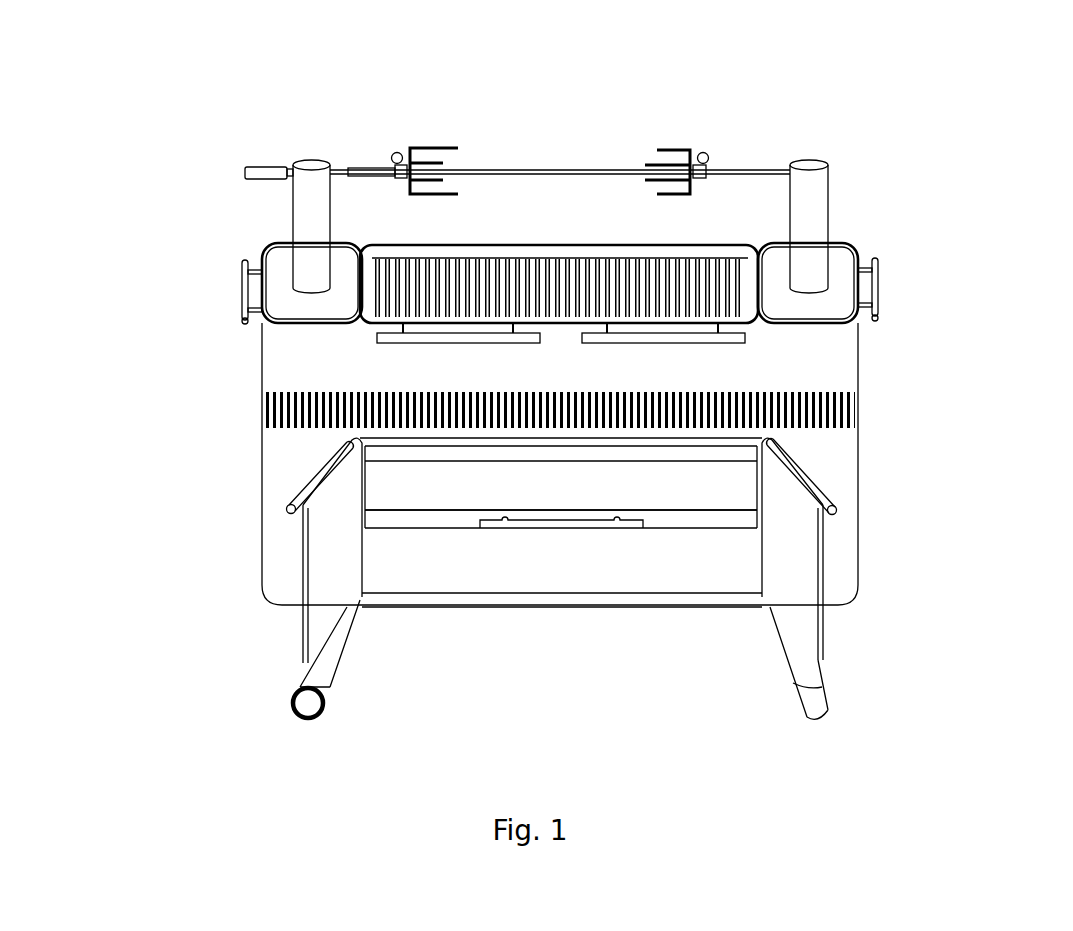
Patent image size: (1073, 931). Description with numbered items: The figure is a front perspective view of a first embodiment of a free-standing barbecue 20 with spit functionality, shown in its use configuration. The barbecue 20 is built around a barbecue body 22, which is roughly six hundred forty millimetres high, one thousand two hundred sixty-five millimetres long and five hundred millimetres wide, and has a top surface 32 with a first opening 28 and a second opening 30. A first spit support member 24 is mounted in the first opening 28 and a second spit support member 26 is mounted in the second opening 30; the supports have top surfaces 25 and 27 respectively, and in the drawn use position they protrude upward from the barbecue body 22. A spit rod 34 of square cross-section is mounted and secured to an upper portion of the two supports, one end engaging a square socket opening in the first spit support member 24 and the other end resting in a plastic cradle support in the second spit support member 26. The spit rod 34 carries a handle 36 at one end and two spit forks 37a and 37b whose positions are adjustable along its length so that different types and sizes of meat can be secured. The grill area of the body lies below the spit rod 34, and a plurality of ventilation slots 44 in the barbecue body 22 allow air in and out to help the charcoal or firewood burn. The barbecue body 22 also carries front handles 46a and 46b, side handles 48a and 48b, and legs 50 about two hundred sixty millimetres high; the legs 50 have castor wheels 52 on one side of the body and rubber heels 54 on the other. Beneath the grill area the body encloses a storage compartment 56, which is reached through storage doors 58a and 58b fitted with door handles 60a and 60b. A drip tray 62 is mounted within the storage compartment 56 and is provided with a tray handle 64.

The barbecue 20 is at (969, 107).
The barbecue body 22 is at (828, 443).
The first spit support member 24 is at (304, 215).
The top surface 25 is at (310, 163).
The second spit support member 26 is at (820, 198).
The top surface 27 is at (808, 163).
The first opening 28 is at (290, 284).
The second opening 30 is at (820, 285).
The top surface 32 is at (302, 312).
The spit rod 34 is at (535, 170).
The handle 36 is at (258, 172).
The spit fork 37a is at (432, 148).
The spit fork 37b is at (668, 150).
The ventilation slots 44 is at (262, 400).
The front handle 46a is at (377, 337).
The front handle 46b is at (735, 337).
The side handle 48a is at (242, 312).
The side handle 48b is at (878, 290).
The legs 50 is at (330, 665).
The castor wheels 52 is at (300, 703).
The rubber heels 54 is at (830, 708).
The storage compartment 56 is at (482, 572).
The storage door 58a is at (325, 573).
The storage door 58b is at (800, 538).
The door handle 60a is at (300, 492).
The door handle 60b is at (822, 481).
The drip tray 62 is at (689, 530).
The tray handle 64 is at (577, 530).